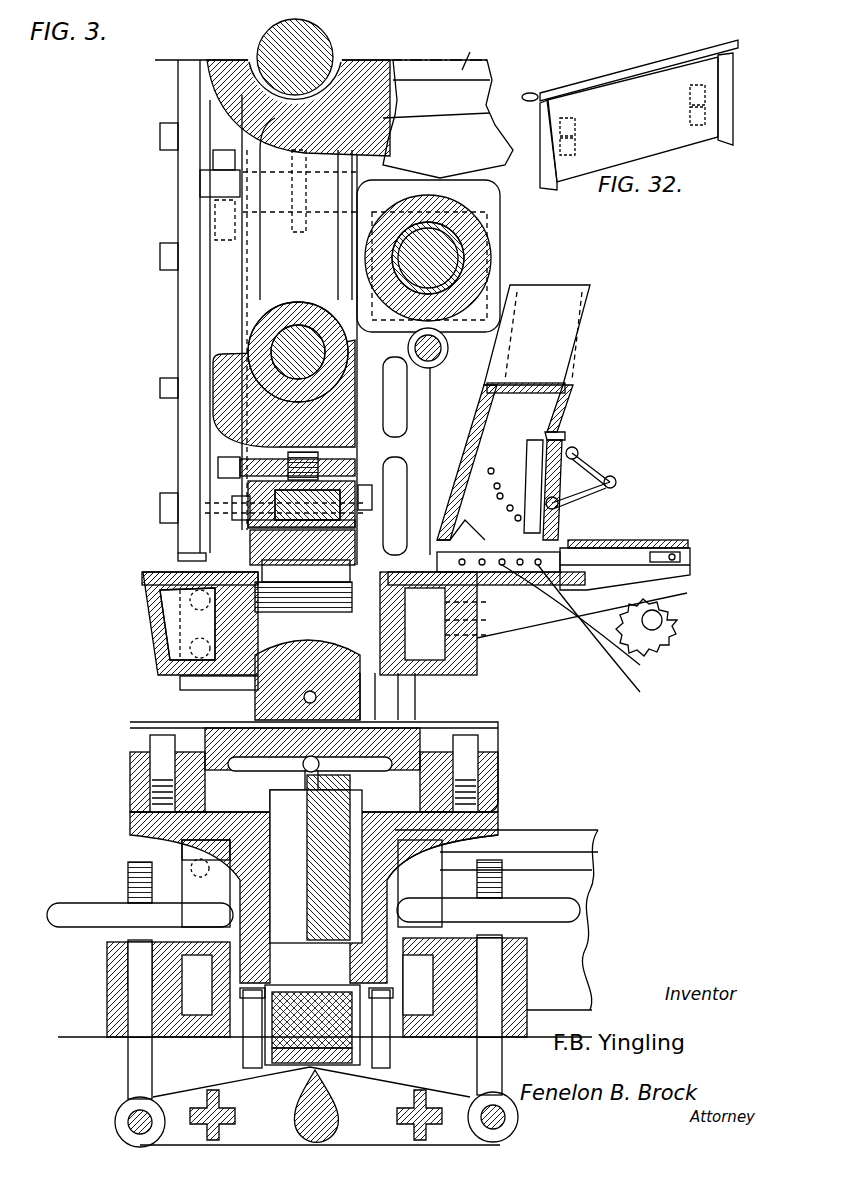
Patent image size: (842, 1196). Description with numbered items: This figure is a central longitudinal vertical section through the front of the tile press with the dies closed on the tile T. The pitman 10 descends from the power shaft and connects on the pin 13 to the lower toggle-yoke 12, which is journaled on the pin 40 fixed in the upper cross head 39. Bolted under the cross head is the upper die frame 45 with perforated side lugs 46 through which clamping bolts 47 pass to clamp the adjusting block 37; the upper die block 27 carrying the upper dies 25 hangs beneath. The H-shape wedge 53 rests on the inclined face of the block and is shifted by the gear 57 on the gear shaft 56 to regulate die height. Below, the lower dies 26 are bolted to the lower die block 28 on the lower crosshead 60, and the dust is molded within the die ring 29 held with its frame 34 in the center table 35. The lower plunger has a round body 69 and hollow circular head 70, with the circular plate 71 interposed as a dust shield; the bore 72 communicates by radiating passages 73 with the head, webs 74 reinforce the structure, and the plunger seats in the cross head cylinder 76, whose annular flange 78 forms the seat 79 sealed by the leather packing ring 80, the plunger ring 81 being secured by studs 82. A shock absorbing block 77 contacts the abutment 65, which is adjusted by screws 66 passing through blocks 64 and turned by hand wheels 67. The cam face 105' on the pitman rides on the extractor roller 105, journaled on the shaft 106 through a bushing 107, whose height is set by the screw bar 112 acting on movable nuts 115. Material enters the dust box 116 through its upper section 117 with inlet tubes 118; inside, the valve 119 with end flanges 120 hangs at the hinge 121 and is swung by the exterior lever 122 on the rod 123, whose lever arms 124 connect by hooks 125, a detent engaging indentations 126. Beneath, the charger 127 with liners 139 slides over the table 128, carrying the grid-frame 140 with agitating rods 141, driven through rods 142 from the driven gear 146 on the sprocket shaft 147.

In FIG. 3, the pitman 10 is at (469, 48).
In FIG. 3, the lower toggle-yoke 12 is at (298, 163).
In FIG. 3, the pin 13 is at (328, 50).
In FIG. 3, the cam face 105' is at (448, 119).
In FIG. 3, the extractor roller 105 is at (459, 258).
In FIG. 3, the bushing 107 is at (498, 238).
In FIG. 3, the shaft 106 is at (496, 260).
In FIG. 3, the screw bar 112 is at (450, 350).
In FIG. 3, the movable nuts 115 is at (455, 338).
In FIG. 3, the upper section 117 is at (588, 322).
In FIG. 3, the distributing inlet tubes 118 is at (575, 393).
In FIG. 3, the dust box 116 is at (540, 445).
In FIG. 3, the hinge 121 is at (565, 445).
In FIG. 32, the hinge 121 is at (722, 45).
In FIG. 3, the valve 119 is at (524, 510).
In FIG. 32, the valve 119 is at (629, 123).
In FIG. 32, the end flanges 120 is at (733, 105).
In FIG. 3, the exterior lever 122 is at (512, 463).
In FIG. 3, the shaft or rod 123 is at (580, 453).
In FIG. 3, the lever arms 124 is at (600, 470).
In FIG. 3, the hooks 125 is at (615, 490).
In FIG. 3, the recesses or indentations 126 is at (620, 478).
In FIG. 3, the wear plates or liners 139 is at (585, 540).
In FIG. 3, the charger 127 is at (688, 542).
In FIG. 3, the rods 142 is at (680, 555).
In FIG. 3, the table 128 is at (690, 578).
In FIG. 3, the driven gear 146 is at (680, 621).
In FIG. 3, the sprocket shaft 147 is at (652, 622).
In FIG. 3, the grid-frame 140 is at (592, 626).
In FIG. 3, the agitating bars or rods 141 is at (610, 637).
In FIG. 3, the upper cross head 39 is at (262, 428).
In FIG. 3, the pin 40 is at (299, 330).
In FIG. 3, the gear 57 is at (352, 440).
In FIG. 3, the gear shaft 56 is at (218, 467).
In FIG. 3, the H-shape wedge 53 is at (248, 486).
In FIG. 3, the clamping bolts 47 is at (232, 508).
In FIG. 3, the adjusting block 37 is at (250, 523).
In FIG. 3, the tile T is at (215, 565).
In FIG. 3, the upper die block 27 is at (255, 545).
In FIG. 3, the upper dies 25 is at (306, 571).
In FIG. 3, the upper die frame 45 is at (358, 458).
In FIG. 3, the side lugs 46 is at (372, 492).
In FIG. 3, the die ring or mold 29 is at (200, 600).
In FIG. 3, the frame 34 is at (210, 632).
In FIG. 3, the lower dies 26 is at (303, 608).
In FIG. 3, the lower die block 28 is at (180, 688).
In FIG. 3, the lower crosshead 60 is at (255, 704).
In FIG. 3, the center table or support 35 is at (478, 655).
In FIG. 3, the circular plate 71 is at (500, 732).
In FIG. 3, the radiating passages 73 is at (373, 762).
In FIG. 3, the webs 74 is at (310, 778).
In FIG. 3, the plunger ring 81 is at (150, 770).
In FIG. 3, the bolts or studs 82 is at (135, 808).
In FIG. 3, the circular head 70 is at (498, 765).
In FIG. 3, the bore 72 is at (313, 887).
In FIG. 3, the round body 69 is at (300, 886).
In FIG. 3, the cross head cylinder 76 is at (183, 858).
In FIG. 3, the annular flange 78 is at (498, 795).
In FIG. 3, the leather packing ring 80 is at (500, 820).
In FIG. 3, the annular seat 79 is at (470, 850).
In FIG. 3, the hand wheels 67 is at (75, 920).
In FIG. 3, the screws 66 is at (128, 880).
In FIG. 3, the blocks 64 is at (107, 1005).
In FIG. 3, the shock absorbing block 77 is at (299, 1026).
In FIG. 3, the stop or abutment 65 is at (320, 1106).